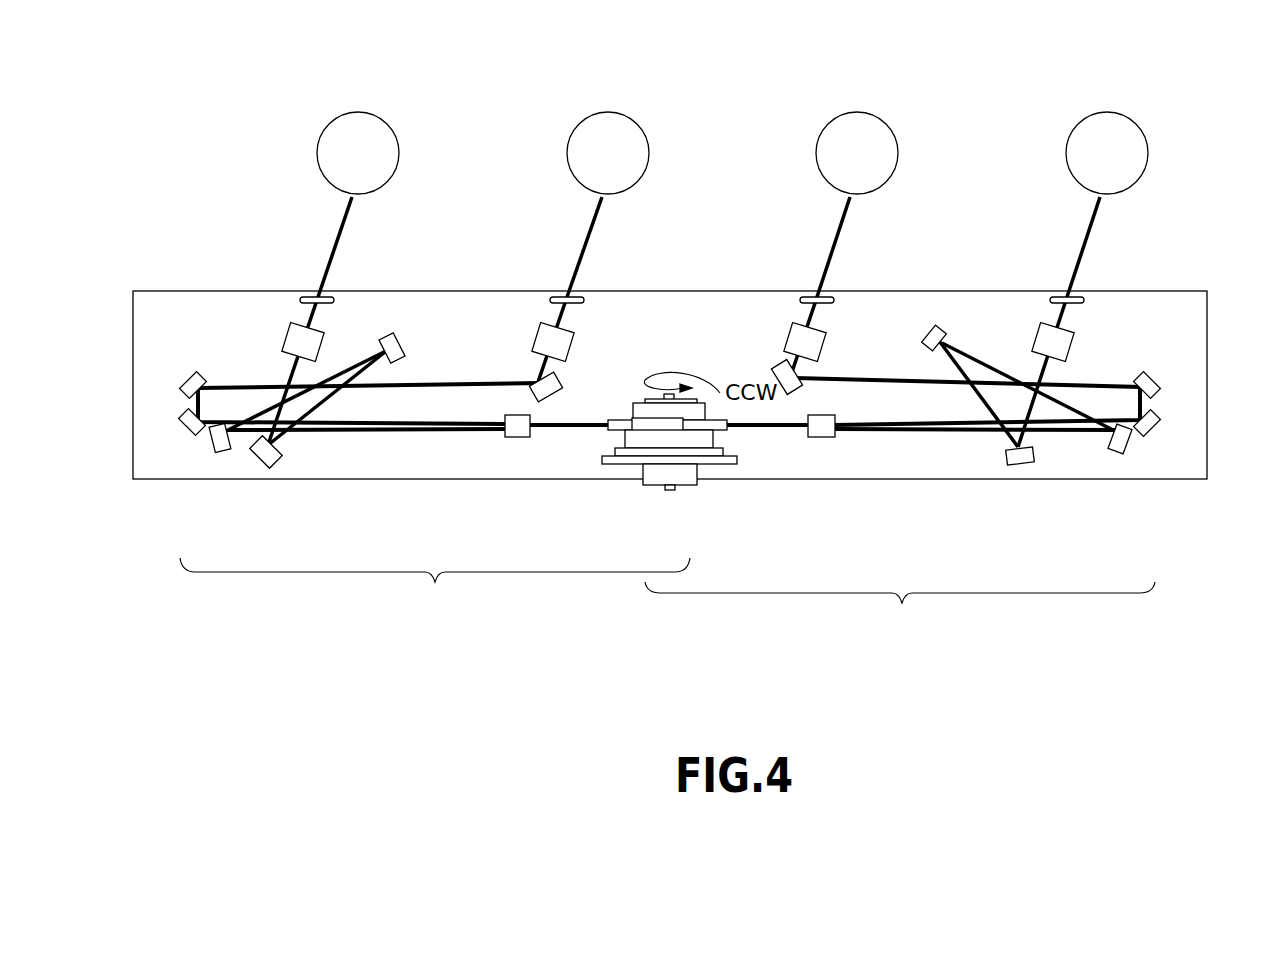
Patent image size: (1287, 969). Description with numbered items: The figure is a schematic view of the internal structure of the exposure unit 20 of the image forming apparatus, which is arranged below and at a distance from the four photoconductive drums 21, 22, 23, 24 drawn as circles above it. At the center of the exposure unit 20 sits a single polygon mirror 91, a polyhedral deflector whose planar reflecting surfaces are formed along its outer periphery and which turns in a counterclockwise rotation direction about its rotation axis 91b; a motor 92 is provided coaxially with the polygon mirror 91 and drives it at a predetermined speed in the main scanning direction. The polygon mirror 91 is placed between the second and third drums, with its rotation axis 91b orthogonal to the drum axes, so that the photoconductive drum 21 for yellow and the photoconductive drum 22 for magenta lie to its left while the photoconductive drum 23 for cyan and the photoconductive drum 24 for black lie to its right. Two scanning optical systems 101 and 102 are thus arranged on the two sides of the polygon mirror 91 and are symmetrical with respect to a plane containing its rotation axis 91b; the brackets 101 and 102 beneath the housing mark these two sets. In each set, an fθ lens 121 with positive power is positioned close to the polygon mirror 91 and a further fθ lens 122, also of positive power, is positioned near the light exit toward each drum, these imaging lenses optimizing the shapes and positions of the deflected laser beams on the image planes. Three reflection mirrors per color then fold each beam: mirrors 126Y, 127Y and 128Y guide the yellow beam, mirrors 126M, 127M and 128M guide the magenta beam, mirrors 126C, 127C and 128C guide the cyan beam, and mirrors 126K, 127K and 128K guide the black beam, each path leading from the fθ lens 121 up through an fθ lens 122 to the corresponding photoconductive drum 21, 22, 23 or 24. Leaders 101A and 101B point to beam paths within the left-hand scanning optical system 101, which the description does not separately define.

The exposure unit 20 is at (1177, 290).
The photoconductive drum 21 is at (358, 112).
The photoconductive drum 22 is at (608, 112).
The photoconductive drum 23 is at (857, 112).
The photoconductive drum 24 is at (1107, 112).
The polygon mirror 91 is at (684, 462).
The rotation axis 91b is at (662, 488).
The motor 92 is at (683, 482).
The scanning optical system 101 is at (435, 586).
The first optical path 101A is at (282, 440).
The second optical path 101B is at (245, 387).
The scanning optical system 102 is at (900, 608).
The fθ lens 121 is at (520, 437).
The fθ lens 122 is at (290, 334).
The reflection mirror 126Y is at (207, 452).
The reflection mirror 126M is at (183, 430).
The reflection mirror 126C is at (1157, 430).
The reflection mirror 126K is at (1133, 445).
The reflection mirror 127Y is at (413, 325).
The reflection mirror 127M is at (185, 378).
The reflection mirror 127C is at (1163, 377).
The reflection mirror 127K is at (943, 332).
The reflection mirror 128Y is at (283, 463).
The reflection mirror 128M is at (562, 375).
The reflection mirror 128C is at (798, 387).
The reflection mirror 128K is at (1027, 465).